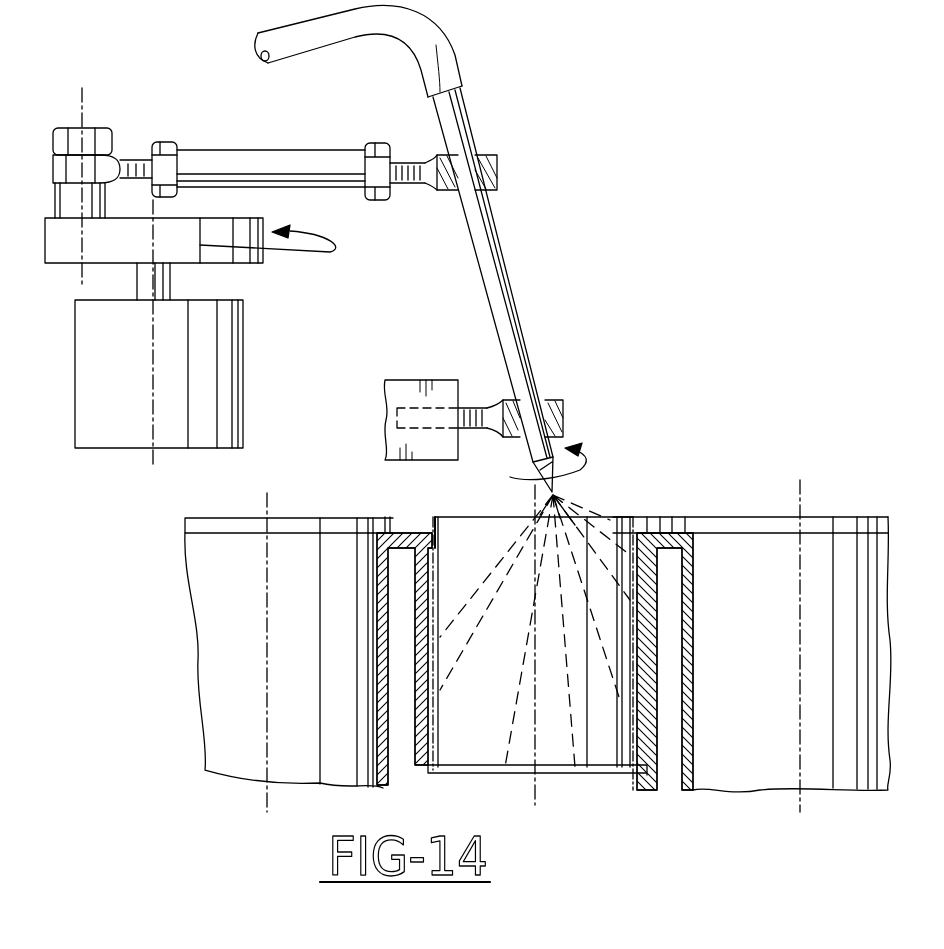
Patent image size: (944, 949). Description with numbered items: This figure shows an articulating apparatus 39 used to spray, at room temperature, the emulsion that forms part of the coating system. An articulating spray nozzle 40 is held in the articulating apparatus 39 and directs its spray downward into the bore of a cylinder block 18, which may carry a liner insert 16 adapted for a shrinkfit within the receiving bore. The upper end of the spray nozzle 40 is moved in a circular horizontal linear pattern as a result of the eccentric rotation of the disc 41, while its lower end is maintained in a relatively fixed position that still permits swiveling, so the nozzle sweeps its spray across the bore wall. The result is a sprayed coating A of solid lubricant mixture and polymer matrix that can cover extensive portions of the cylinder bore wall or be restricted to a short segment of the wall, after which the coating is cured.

The articulating apparatus 39 is at (243, 150).
The articulating spray nozzle 40 is at (520, 325).
The disc 41 is at (188, 244).
The liner insert 16 is at (440, 670).
The cylinder block 18 is at (421, 745).
The sprayed coating A is at (440, 552).